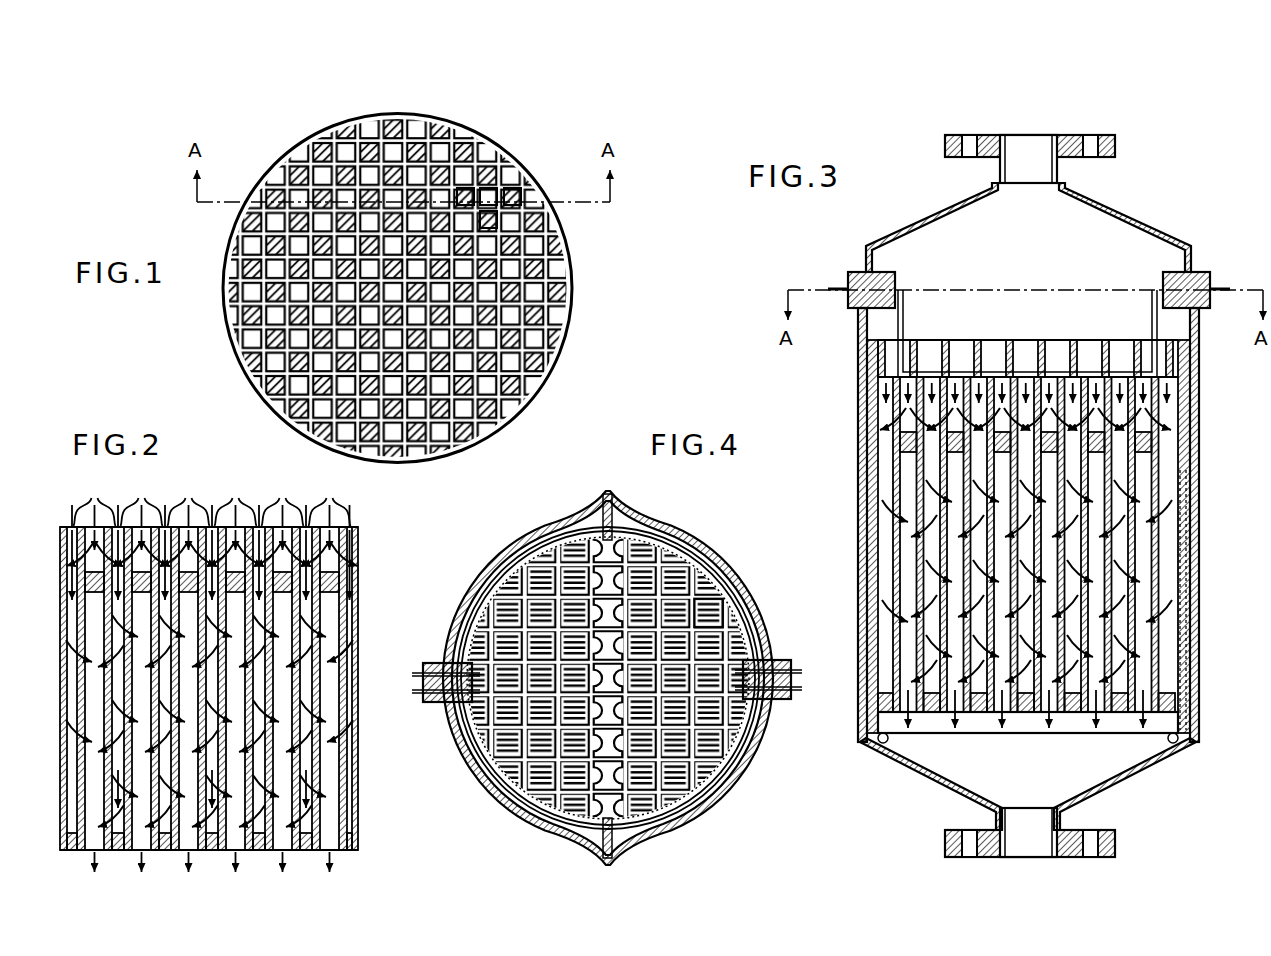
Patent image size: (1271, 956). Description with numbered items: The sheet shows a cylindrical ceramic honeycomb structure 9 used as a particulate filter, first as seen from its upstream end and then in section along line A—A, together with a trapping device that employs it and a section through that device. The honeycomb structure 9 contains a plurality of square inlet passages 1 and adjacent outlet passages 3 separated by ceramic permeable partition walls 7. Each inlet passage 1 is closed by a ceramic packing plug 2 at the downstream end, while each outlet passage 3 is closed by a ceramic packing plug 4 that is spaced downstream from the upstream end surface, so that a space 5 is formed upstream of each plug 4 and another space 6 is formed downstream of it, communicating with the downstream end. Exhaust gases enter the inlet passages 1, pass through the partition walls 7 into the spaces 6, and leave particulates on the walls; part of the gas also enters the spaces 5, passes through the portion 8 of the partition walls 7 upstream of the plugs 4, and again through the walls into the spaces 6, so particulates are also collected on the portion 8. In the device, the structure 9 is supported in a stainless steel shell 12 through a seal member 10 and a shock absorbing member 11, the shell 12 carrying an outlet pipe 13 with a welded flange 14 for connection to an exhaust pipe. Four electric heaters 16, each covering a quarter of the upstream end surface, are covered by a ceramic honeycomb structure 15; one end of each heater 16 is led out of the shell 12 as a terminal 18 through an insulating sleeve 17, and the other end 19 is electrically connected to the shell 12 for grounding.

In FIG. 1, the inlet passage 1 is at (443, 196).
In FIG. 2, the inlet passage 1 is at (253, 540).
In FIG. 1, the ceramic packing plug 2 is at (493, 218).
In FIG. 2, the ceramic packing plug 2 is at (303, 852).
In FIG. 1, the outlet passage 3 is at (466, 196).
In FIG. 2, the outlet passage 3 is at (280, 812).
In FIG. 1, the ceramic packing plug 4 is at (518, 190).
In FIG. 2, the ceramic packing plug 4 is at (335, 580).
In FIG. 2, the space 5 is at (290, 533).
In FIG. 2, the space 6 is at (280, 617).
In FIG. 1, the ceramic permeable partition wall 7 is at (493, 195).
In FIG. 2, the ceramic permeable partition wall 7 is at (317, 673).
In FIG. 2, the portion of the partition walls 8 is at (273, 538).
In FIG. 2, the ceramic honeycomb structure 9 is at (360, 763).
In FIG. 4, the ceramic honeycomb structure 9 is at (602, 780).
In FIG. 3, the ceramic honeycomb structure 9 is at (1125, 623).
In FIG. 4, the seal member 10 is at (712, 792).
In FIG. 3, the seal member 10 is at (1190, 405).
In FIG. 3, the shock absorbing member 11 is at (1193, 540).
In FIG. 4, the shell 12 is at (738, 772).
In FIG. 3, the shell 12 is at (1196, 444).
In FIG. 3, the outlet pipe 13 is at (1062, 185).
In FIG. 3, the flange 14 is at (1115, 147).
In FIG. 4, the ceramic honeycomb structure 15 is at (723, 722).
In FIG. 3, the ceramic honeycomb structure 15 is at (1140, 338).
In FIG. 4, the electric heater 16 is at (716, 602).
In FIG. 3, the electric heater 16 is at (1133, 368).
In FIG. 4, the sleeve 17 is at (773, 658).
In FIG. 3, the sleeve 17 is at (1198, 270).
In FIG. 4, the terminal 18 is at (791, 692).
In FIG. 3, the terminal 18 is at (1226, 287).
In FIG. 4, the other end 19 is at (617, 832).